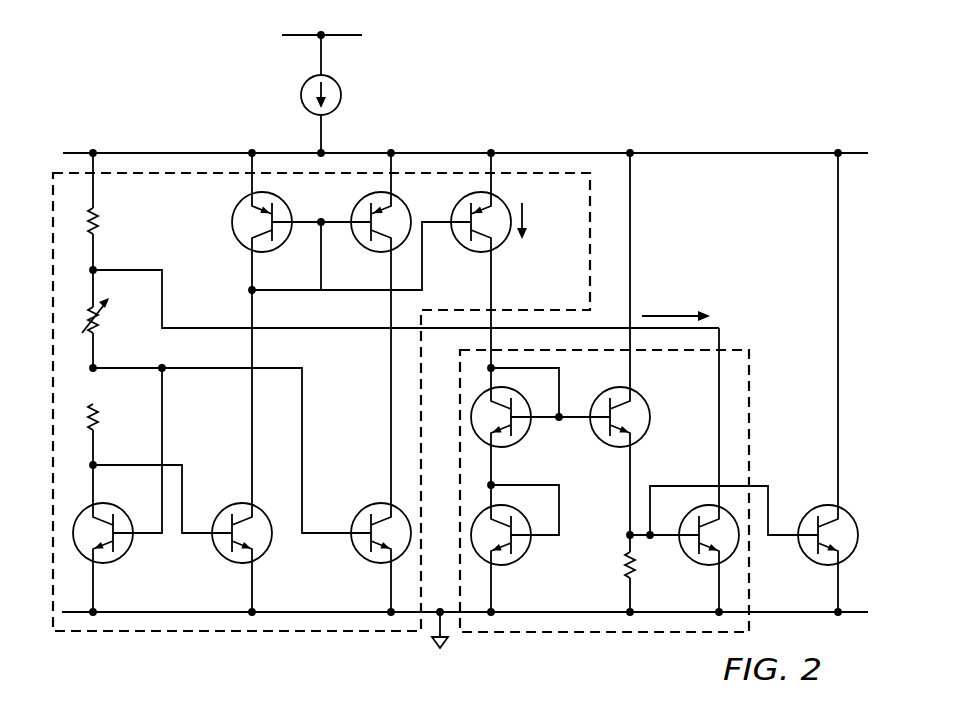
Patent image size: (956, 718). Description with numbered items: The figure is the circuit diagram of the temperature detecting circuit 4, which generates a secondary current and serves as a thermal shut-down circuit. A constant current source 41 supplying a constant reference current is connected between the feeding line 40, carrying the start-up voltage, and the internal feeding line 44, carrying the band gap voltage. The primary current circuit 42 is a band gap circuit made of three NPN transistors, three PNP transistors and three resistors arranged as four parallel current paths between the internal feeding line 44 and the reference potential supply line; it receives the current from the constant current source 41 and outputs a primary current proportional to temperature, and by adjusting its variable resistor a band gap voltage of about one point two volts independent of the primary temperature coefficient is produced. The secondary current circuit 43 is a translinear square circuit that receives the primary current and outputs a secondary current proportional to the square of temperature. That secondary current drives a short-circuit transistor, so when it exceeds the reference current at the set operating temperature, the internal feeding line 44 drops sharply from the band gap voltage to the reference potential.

The circuit (BANDGAP&TL-SQR.) 4 is at (600, 104).
The feeding line 40 is at (296, 36).
The constant current source 41 is at (302, 97).
The primary current circuit 42 is at (205, 632).
The secondary current circuit 43 is at (612, 633).
The internal feeding line 44 is at (781, 154).